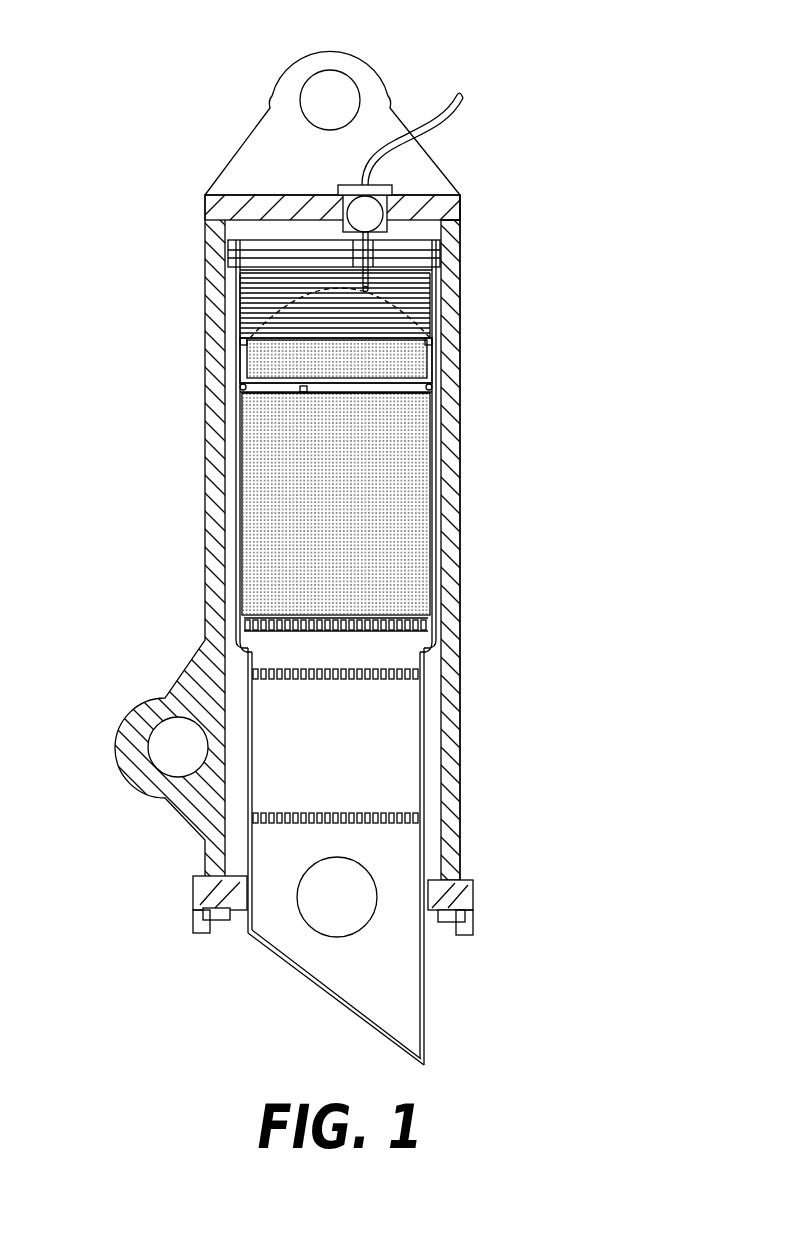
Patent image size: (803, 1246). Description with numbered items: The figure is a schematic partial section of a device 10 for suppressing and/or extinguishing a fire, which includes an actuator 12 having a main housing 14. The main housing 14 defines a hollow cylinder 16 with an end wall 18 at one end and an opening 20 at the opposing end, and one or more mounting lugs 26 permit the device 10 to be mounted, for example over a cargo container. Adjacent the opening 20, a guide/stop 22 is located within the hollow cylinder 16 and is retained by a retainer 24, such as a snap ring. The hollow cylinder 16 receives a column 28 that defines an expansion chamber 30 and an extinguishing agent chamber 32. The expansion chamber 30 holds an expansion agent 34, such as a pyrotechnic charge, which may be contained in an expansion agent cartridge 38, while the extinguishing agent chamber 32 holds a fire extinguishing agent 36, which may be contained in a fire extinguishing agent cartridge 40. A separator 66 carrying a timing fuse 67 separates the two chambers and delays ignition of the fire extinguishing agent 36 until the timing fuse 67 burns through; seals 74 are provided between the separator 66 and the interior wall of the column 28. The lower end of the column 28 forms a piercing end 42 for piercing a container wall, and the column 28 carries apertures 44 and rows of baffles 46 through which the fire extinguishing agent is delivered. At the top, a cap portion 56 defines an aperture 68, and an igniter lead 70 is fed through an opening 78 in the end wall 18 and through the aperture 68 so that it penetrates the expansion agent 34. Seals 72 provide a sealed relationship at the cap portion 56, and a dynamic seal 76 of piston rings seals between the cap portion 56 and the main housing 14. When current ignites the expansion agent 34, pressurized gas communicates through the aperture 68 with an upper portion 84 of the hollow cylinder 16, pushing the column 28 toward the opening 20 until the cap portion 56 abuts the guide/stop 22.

The device 10 is at (568, 142).
The actuator 12 is at (548, 540).
The main housing 14 is at (205, 585).
The hollow cylinder 16 is at (433, 797).
The end wall 18 is at (462, 213).
The opening 20 is at (240, 930).
The guide/stop 22 is at (190, 893).
The retainer 24 is at (200, 916).
The mounting lugs 26 is at (360, 64).
The column 28 is at (405, 742).
The expansion chamber 30 is at (443, 356).
The extinguishing agent chamber 32 is at (413, 573).
The expansion agent 34 is at (323, 369).
The fire extinguishing agent 36 is at (323, 509).
The expansion agent cartridge 38 is at (238, 314).
The fire extinguishing agent cartridge 40 is at (435, 503).
The piercing end 42 is at (327, 992).
The apertures 44 is at (358, 915).
The baffles 46 is at (430, 624).
The cap portion 56 is at (233, 272).
The separator 66 is at (368, 392).
The timing fuse 67 is at (300, 392).
The aperture 68 is at (442, 270).
The igniter lead 70 is at (462, 97).
The seals 72 is at (242, 340).
The seals 74 is at (242, 388).
The dynamic seal 76 is at (232, 246).
The opening 78 is at (413, 187).
The upper portion 84 is at (246, 222).